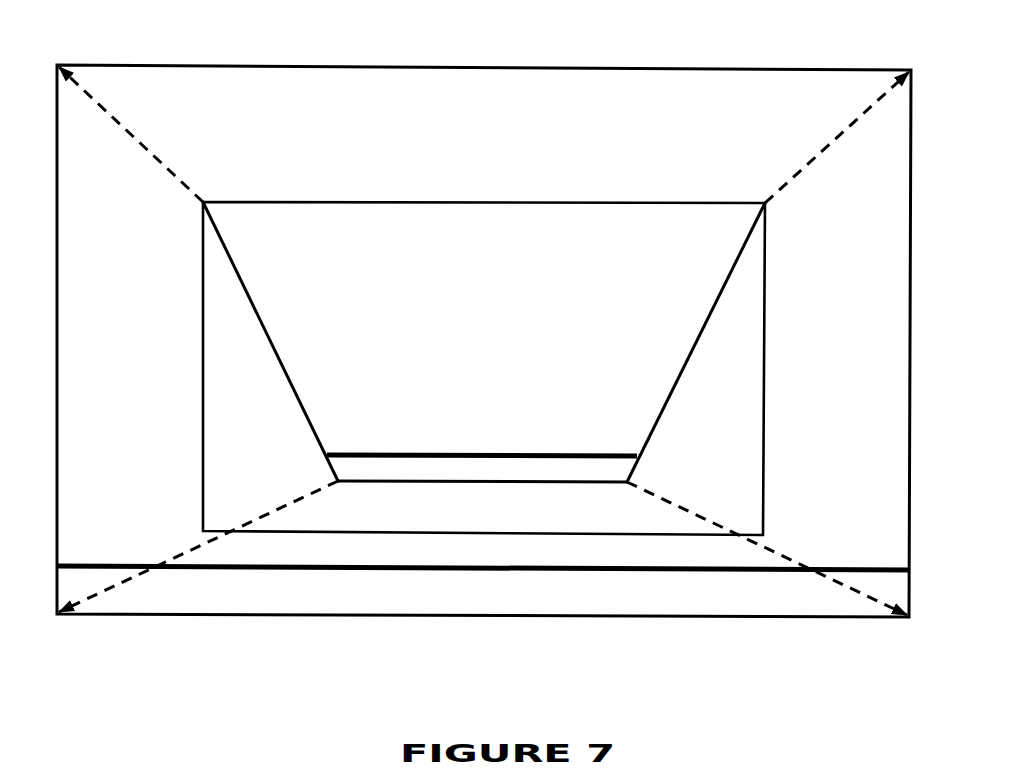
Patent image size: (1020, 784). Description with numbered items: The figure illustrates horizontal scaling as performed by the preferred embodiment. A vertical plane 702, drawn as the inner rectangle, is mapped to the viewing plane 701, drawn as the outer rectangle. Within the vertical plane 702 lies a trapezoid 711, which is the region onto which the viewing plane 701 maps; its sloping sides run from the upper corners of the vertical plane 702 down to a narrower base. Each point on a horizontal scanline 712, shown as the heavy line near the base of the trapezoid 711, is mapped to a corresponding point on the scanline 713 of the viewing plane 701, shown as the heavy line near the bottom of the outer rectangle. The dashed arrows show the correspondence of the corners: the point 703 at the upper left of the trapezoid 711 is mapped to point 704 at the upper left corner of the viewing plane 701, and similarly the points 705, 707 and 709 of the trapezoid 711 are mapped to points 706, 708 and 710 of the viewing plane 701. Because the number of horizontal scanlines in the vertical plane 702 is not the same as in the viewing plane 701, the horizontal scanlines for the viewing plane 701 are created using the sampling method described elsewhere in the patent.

The viewing plane 701 is at (503, 620).
The vertical plane 702 is at (765, 338).
The point of the trapezoid 703 is at (222, 187).
The point of viewing plane 704 is at (123, 116).
The point of the trapezoid 705 is at (744, 187).
The point of viewing plane 706 is at (843, 119).
The point of the trapezoid 707 is at (363, 497).
The point of viewing plane 708 is at (190, 563).
The point of the trapezoid 709 is at (603, 497).
The point of viewing plane 710 is at (775, 566).
The trapezoid 711 is at (693, 345).
The horizontal scanline 712 is at (500, 452).
The scanline of the viewing plane 713 is at (628, 573).